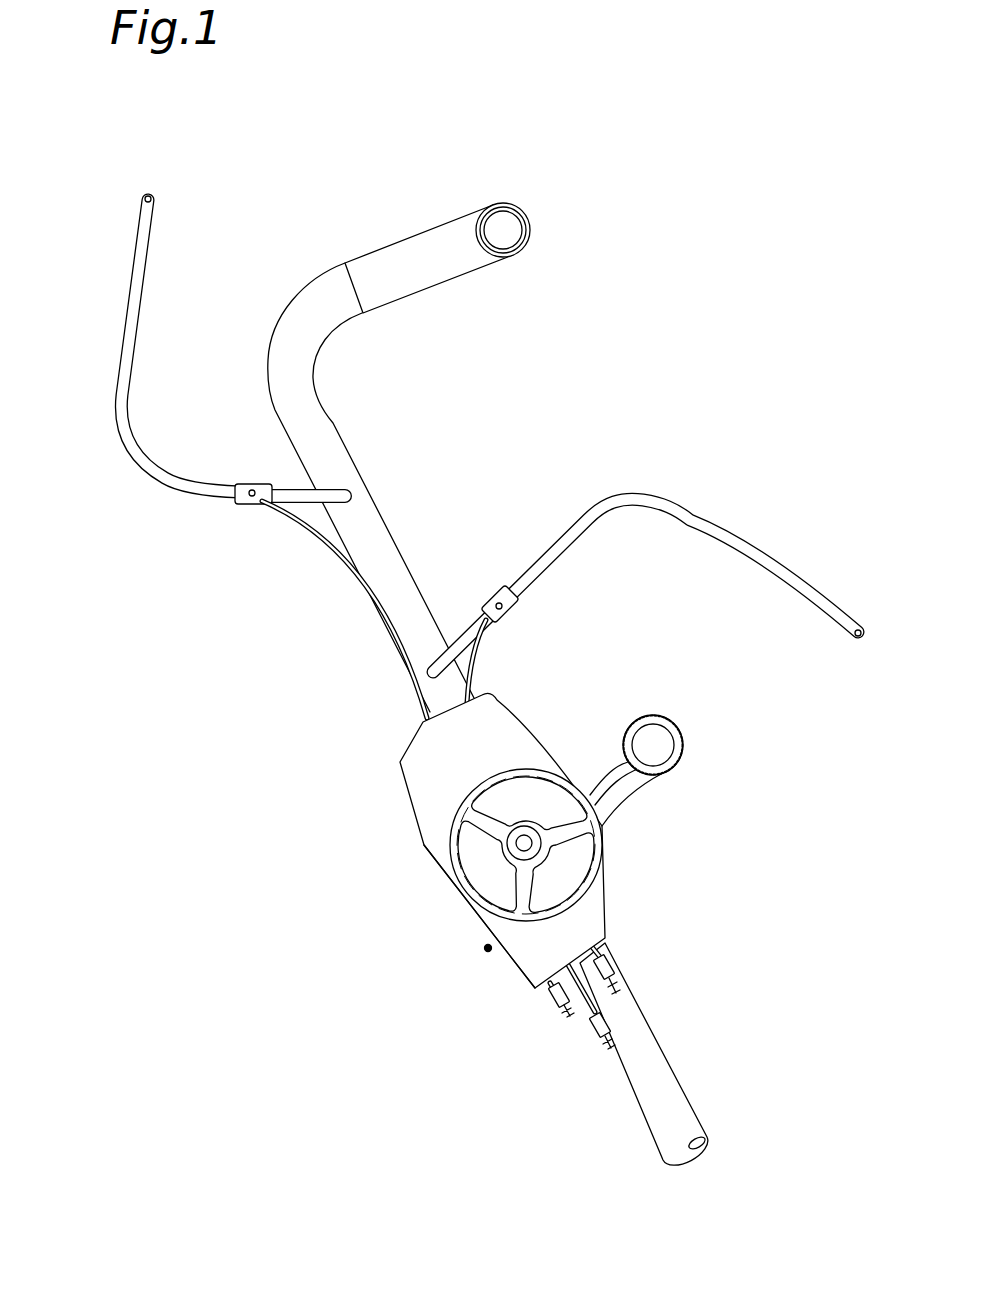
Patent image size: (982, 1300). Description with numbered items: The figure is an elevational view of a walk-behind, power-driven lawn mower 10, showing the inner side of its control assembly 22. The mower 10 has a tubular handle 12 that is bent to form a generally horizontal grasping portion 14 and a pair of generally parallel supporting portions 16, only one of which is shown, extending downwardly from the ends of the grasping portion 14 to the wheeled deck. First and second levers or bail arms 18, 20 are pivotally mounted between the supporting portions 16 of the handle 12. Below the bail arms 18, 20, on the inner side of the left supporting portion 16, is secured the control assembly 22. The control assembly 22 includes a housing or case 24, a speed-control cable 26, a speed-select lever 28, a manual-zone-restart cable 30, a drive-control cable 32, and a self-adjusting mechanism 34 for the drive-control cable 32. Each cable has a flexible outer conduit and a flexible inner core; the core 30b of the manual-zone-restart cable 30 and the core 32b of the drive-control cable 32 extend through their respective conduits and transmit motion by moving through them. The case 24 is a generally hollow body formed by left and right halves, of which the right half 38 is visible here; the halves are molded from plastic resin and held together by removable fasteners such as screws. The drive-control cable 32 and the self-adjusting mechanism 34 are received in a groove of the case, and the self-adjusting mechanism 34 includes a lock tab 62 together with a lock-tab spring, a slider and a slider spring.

The lawn mower 10 is at (329, 988).
The tubular handle 12 is at (399, 426).
The grasping portion 14 is at (393, 238).
The supporting portions 16 is at (645, 1123).
The first bail arm 18 is at (758, 545).
The second bail arm 20 is at (130, 302).
The control assembly 22 is at (630, 828).
The case 24 is at (422, 866).
The speed-control cable 26 is at (548, 997).
The speed-select lever 28 is at (654, 714).
The manual-zone-restart cable 30 is at (612, 955).
The core of the manual-zone-restart cable 30b is at (478, 652).
The drive-control cable 32 is at (578, 1013).
The core of the drive-control cable 32b is at (382, 628).
The self-adjusting mechanism 34 is at (483, 947).
The right half of the case 38 is at (430, 803).
The lock tab 62 is at (492, 950).